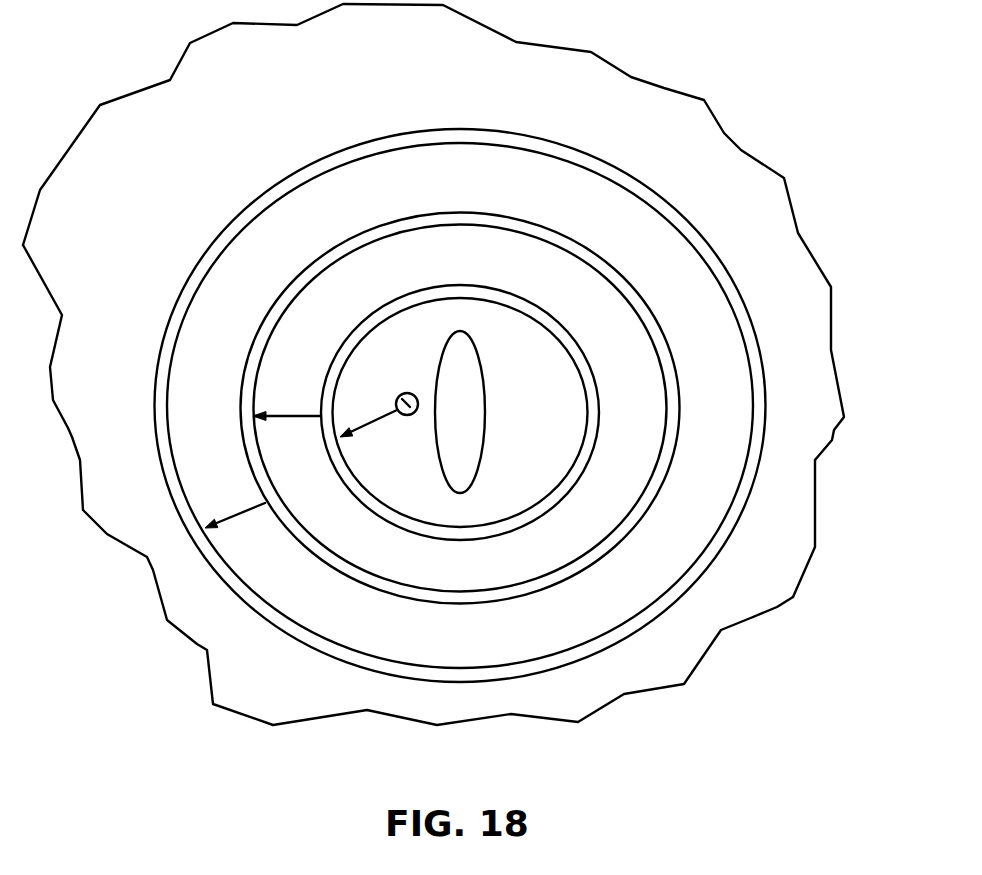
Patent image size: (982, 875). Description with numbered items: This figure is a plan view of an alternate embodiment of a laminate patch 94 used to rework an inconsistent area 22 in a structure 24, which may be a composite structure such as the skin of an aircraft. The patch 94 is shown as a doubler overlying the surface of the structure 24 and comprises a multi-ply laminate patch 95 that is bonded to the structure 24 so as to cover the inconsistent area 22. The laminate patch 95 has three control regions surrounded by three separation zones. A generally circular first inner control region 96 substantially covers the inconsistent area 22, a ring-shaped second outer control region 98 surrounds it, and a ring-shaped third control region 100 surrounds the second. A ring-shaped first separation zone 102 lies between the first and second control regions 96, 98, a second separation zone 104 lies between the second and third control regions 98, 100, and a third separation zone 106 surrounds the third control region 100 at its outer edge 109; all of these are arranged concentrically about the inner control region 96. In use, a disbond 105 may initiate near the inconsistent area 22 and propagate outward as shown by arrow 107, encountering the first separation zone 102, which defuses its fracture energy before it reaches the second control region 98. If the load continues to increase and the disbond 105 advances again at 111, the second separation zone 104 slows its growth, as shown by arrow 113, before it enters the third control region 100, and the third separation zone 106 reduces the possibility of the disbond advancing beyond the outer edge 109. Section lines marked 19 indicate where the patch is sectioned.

The section line 19- 19 is at (454, 115).
The inconsistent area 22 is at (463, 436).
The structure 24 is at (770, 488).
The laminate patch 94 is at (637, 126).
The multi-ply laminate patch 95 is at (772, 371).
The first inner control region 96 is at (360, 380).
The second outer control region 98 is at (503, 258).
The third control region 100 is at (673, 524).
The first separation zone 102 is at (343, 350).
The second separation zone 104 is at (654, 327).
The disbond 105 is at (407, 393).
The third separation zone 106 is at (693, 237).
The arrow 107 is at (378, 419).
The outer edge 109 is at (286, 148).
The disbond growth 111 is at (287, 416).
The arrow 113 is at (242, 510).